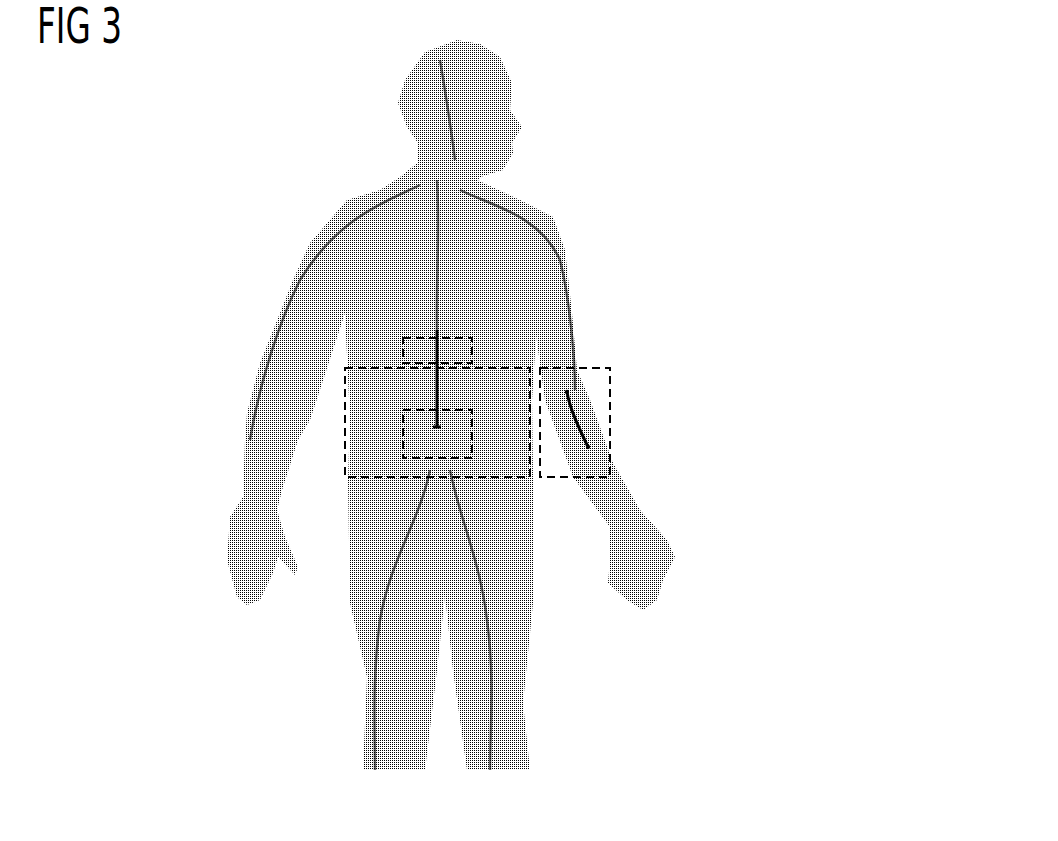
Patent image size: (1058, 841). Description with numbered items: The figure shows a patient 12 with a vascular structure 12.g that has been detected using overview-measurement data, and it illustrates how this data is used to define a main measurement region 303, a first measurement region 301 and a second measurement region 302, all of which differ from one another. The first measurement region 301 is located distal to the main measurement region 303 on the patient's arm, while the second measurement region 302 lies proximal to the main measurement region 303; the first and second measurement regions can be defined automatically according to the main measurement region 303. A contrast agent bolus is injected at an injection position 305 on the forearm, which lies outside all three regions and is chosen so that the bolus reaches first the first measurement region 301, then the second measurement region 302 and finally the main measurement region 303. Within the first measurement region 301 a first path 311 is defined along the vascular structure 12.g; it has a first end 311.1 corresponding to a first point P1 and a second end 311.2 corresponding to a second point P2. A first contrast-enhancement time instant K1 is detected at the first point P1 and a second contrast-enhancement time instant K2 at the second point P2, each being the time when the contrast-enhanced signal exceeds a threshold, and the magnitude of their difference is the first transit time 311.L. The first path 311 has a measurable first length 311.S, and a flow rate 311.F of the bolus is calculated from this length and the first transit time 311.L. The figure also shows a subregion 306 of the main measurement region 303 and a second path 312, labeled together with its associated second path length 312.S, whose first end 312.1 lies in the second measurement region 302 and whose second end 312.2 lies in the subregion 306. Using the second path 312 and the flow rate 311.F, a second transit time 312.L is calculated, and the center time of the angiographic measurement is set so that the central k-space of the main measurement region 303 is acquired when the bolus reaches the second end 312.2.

The patient 12 is at (451, 405).
The vascular structure 12.g is at (375, 212).
The first end of the second path 312.1 is at (433, 340).
The second path 312 is at (242, 378).
The vessel segment 312.S is at (242, 378).
The second transit time 312.L is at (435, 388).
The second end of the second path 312.2 is at (435, 427).
The subregion 306 is at (403, 431).
The main measurement region 303 is at (345, 462).
The second measurement region 302 is at (472, 351).
The first path 311 is at (739, 419).
The first length 311.S is at (739, 419).
The first transit time 311.L is at (739, 419).
The flow rate 311.F is at (578, 415).
The second end of the first path 311.2 is at (670, 392).
The second point P2 is at (670, 392).
The second contrast-enhancement time instant K2 is at (565, 391).
The first end of the first path 311.1 is at (690, 449).
The first point P1 is at (690, 449).
The first contrast-enhancement time instant K1 is at (585, 443).
The first measurement region 301 is at (567, 478).
The injection position 305 is at (622, 512).